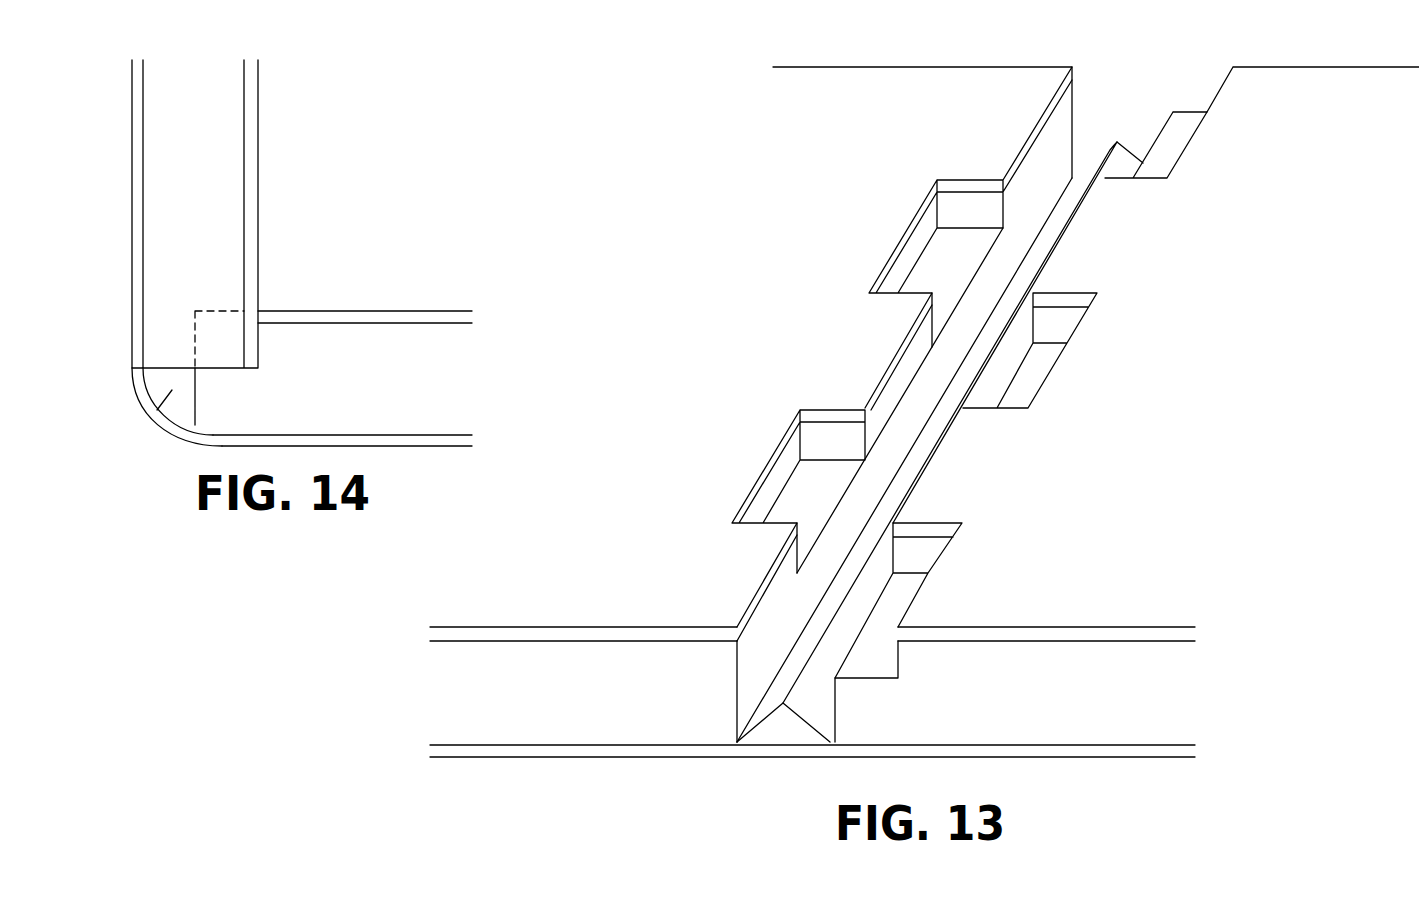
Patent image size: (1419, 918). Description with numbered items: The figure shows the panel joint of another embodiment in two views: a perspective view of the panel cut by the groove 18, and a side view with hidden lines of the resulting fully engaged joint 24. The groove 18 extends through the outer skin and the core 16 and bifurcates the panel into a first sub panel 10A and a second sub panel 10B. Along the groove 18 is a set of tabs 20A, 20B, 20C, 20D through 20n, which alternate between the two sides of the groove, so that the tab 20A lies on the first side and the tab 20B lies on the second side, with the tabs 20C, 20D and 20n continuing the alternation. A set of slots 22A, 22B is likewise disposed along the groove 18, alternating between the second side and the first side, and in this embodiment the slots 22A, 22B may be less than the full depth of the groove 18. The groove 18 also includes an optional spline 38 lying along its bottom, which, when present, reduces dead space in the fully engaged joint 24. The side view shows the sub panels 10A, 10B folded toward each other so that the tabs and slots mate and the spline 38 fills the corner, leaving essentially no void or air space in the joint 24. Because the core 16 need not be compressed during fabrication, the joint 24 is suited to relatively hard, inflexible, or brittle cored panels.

In FIG. 14, the first sub panel 10A is at (215, 169).
In FIG. 13, the first sub panel 10A is at (846, 196).
In FIG. 14, the second sub panel 10B is at (410, 390).
In FIG. 13, the second sub panel 10B is at (1282, 249).
In FIG. 13, the core 16 is at (589, 700).
In FIG. 13, the groove 18 is at (705, 768).
In FIG. 13, the tab 20A is at (748, 570).
In FIG. 13, the tab 20B is at (957, 470).
In FIG. 13, the tab 20C is at (870, 350).
In FIG. 13, the tab 20D is at (1095, 245).
In FIG. 13, the tab 20n is at (1000, 130).
In FIG. 13, the slot 22A is at (900, 598).
In FIG. 13, the slot 22B is at (810, 478).
In FIG. 14, the joint 24 is at (267, 295).
In FIG. 14, the spline 38 is at (165, 405).
In FIG. 13, the spline 38 is at (780, 725).